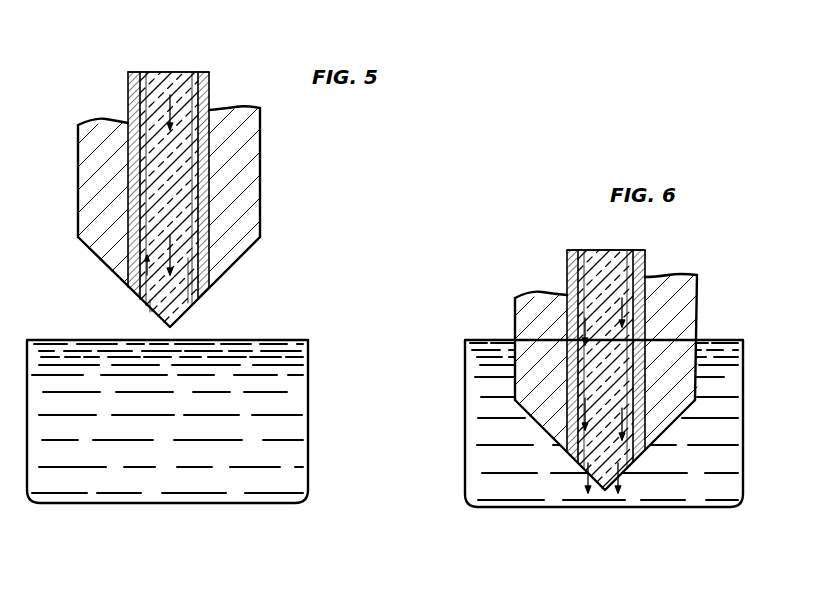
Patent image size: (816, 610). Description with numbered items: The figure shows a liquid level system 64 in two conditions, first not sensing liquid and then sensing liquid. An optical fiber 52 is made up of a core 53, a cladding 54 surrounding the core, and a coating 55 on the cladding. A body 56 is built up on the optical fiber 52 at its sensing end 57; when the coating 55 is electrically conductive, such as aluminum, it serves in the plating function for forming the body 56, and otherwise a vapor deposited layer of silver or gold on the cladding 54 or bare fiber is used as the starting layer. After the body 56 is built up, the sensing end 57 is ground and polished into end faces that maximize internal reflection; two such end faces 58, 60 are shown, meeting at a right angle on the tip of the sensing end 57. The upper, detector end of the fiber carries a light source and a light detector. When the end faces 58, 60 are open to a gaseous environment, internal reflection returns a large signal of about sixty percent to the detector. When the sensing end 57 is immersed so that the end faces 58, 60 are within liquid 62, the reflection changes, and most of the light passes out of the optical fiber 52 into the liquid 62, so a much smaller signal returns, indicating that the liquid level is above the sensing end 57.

In FIG. 5, the optical fiber 52 is at (215, 95).
In FIG. 6, the optical fiber 52 is at (595, 247).
In FIG. 5, the core 53 is at (168, 71).
In FIG. 6, the core 53 is at (607, 250).
In FIG. 5, the cladding 54 is at (193, 71).
In FIG. 6, the cladding 54 is at (632, 250).
In FIG. 5, the coating 55 is at (210, 72).
In FIG. 6, the coating 55 is at (567, 285).
In FIG. 5, the body 56 is at (260, 147).
In FIG. 6, the body 56 is at (697, 303).
In FIG. 5, the sensing end 57 is at (263, 200).
In FIG. 6, the sensing end 57 is at (508, 318).
In FIG. 5, the end face 58 is at (148, 311).
In FIG. 6, the end face 58 is at (583, 473).
In FIG. 5, the end face 60 is at (172, 305).
In FIG. 6, the end face 60 is at (630, 473).
In FIG. 5, the liquid 62 is at (292, 385).
In FIG. 6, the liquid 62 is at (483, 433).
In FIG. 5, the liquid level system 64 is at (108, 97).
In FIG. 6, the liquid level system 64 is at (565, 263).